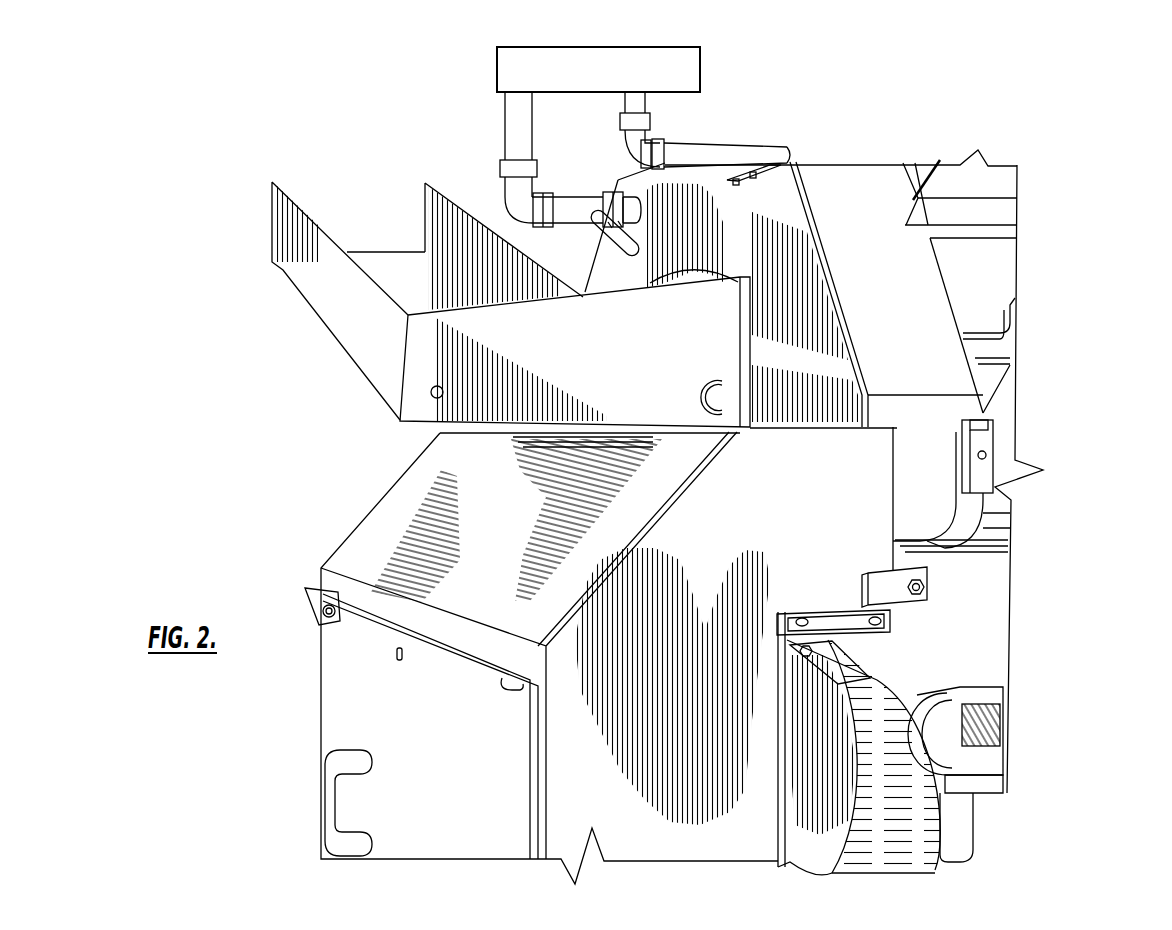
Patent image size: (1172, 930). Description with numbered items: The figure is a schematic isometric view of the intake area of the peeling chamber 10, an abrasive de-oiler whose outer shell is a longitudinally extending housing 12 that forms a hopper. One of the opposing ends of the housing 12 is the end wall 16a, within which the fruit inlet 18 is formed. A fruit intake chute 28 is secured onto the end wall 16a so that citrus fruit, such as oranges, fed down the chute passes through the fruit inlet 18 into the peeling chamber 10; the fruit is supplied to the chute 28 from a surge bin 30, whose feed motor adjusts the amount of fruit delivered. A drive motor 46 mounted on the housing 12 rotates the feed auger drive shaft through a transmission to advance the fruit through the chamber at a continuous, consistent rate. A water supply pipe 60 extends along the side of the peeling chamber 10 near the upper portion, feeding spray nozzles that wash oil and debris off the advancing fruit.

The peeling chamber 10 is at (1100, 150).
The housing 12 is at (930, 348).
The end wall 16a is at (785, 200).
The fruit inlet 18 is at (702, 217).
The fruit intake chute 28 is at (367, 357).
The surge bin 30 is at (473, 163).
The drive motor 46 is at (987, 757).
The water supply pipe 60 is at (623, 165).